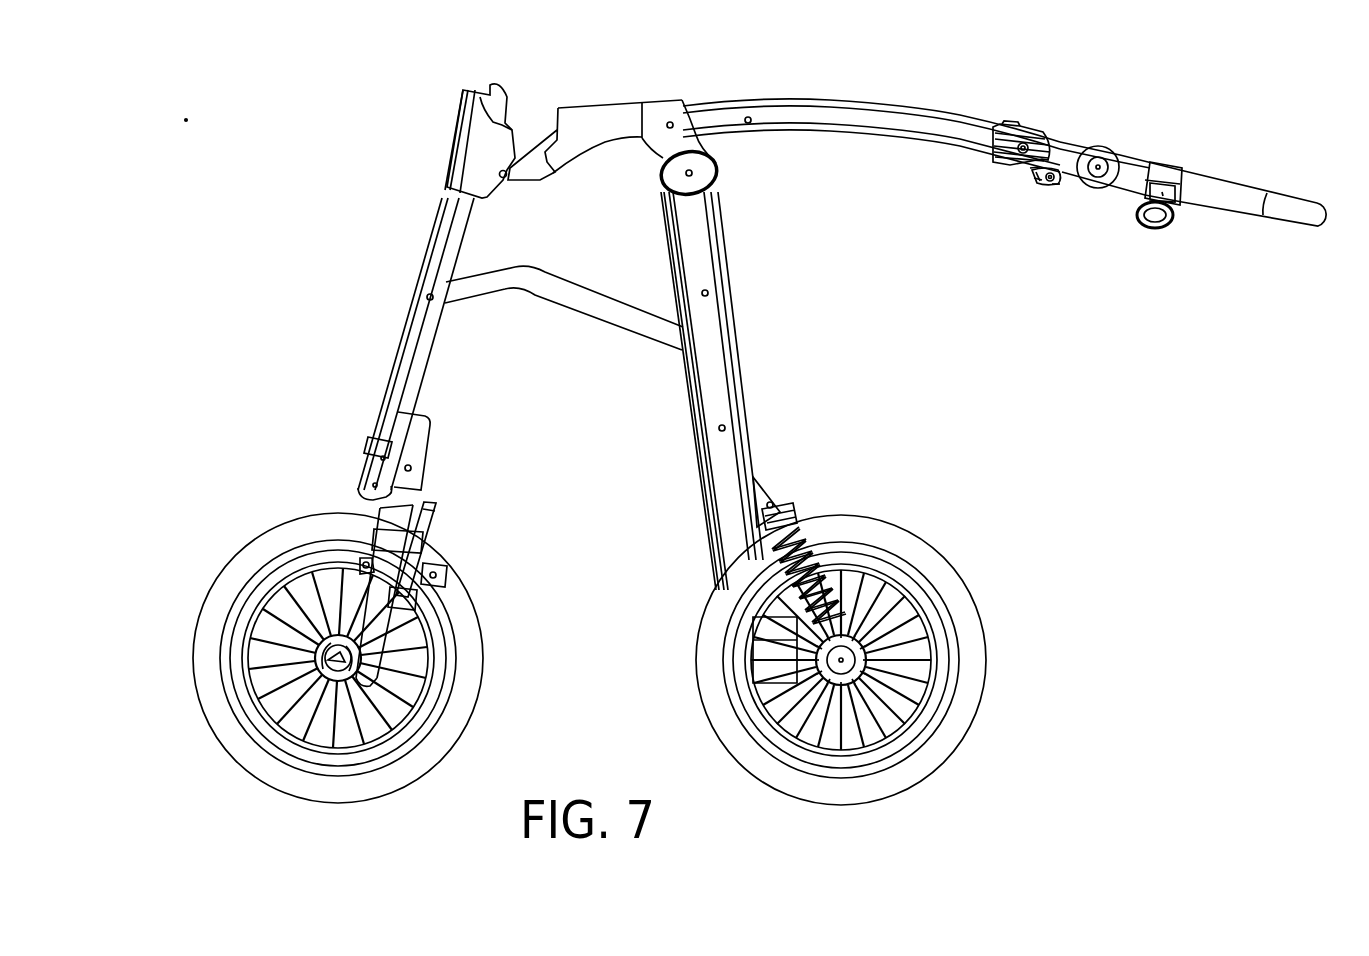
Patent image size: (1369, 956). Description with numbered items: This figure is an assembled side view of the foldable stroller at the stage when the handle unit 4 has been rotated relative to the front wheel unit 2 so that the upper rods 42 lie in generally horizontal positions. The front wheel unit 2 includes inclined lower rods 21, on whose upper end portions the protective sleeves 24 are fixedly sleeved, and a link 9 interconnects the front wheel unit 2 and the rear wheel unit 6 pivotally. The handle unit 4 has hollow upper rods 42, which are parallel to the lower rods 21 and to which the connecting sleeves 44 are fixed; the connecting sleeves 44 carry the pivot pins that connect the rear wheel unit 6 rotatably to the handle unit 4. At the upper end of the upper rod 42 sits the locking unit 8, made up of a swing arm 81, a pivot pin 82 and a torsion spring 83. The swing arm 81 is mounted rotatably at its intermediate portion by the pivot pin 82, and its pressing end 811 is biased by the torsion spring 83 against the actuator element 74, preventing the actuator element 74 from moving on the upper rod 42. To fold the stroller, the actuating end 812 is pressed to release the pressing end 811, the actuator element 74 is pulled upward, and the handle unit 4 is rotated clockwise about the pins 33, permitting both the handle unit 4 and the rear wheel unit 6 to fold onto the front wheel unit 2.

The front wheel unit 2 is at (492, 618).
The handle unit 4 is at (1066, 126).
The rear wheel unit 6 is at (852, 527).
The locking unit 8 is at (1018, 231).
The link 9 is at (610, 322).
The lower rod 21 is at (415, 373).
The protective sleeve 24 is at (455, 163).
The pin 33 is at (506, 180).
The upper rod 42 is at (838, 123).
The connecting sleeve 44 is at (606, 113).
The actuator element 74 is at (1028, 137).
The swing arm 81 is at (1043, 176).
The pivot pin 82 is at (1037, 179).
The torsion spring 83 is at (1057, 184).
The pressing end 811 is at (1030, 171).
The actuating end 812 is at (1057, 190).